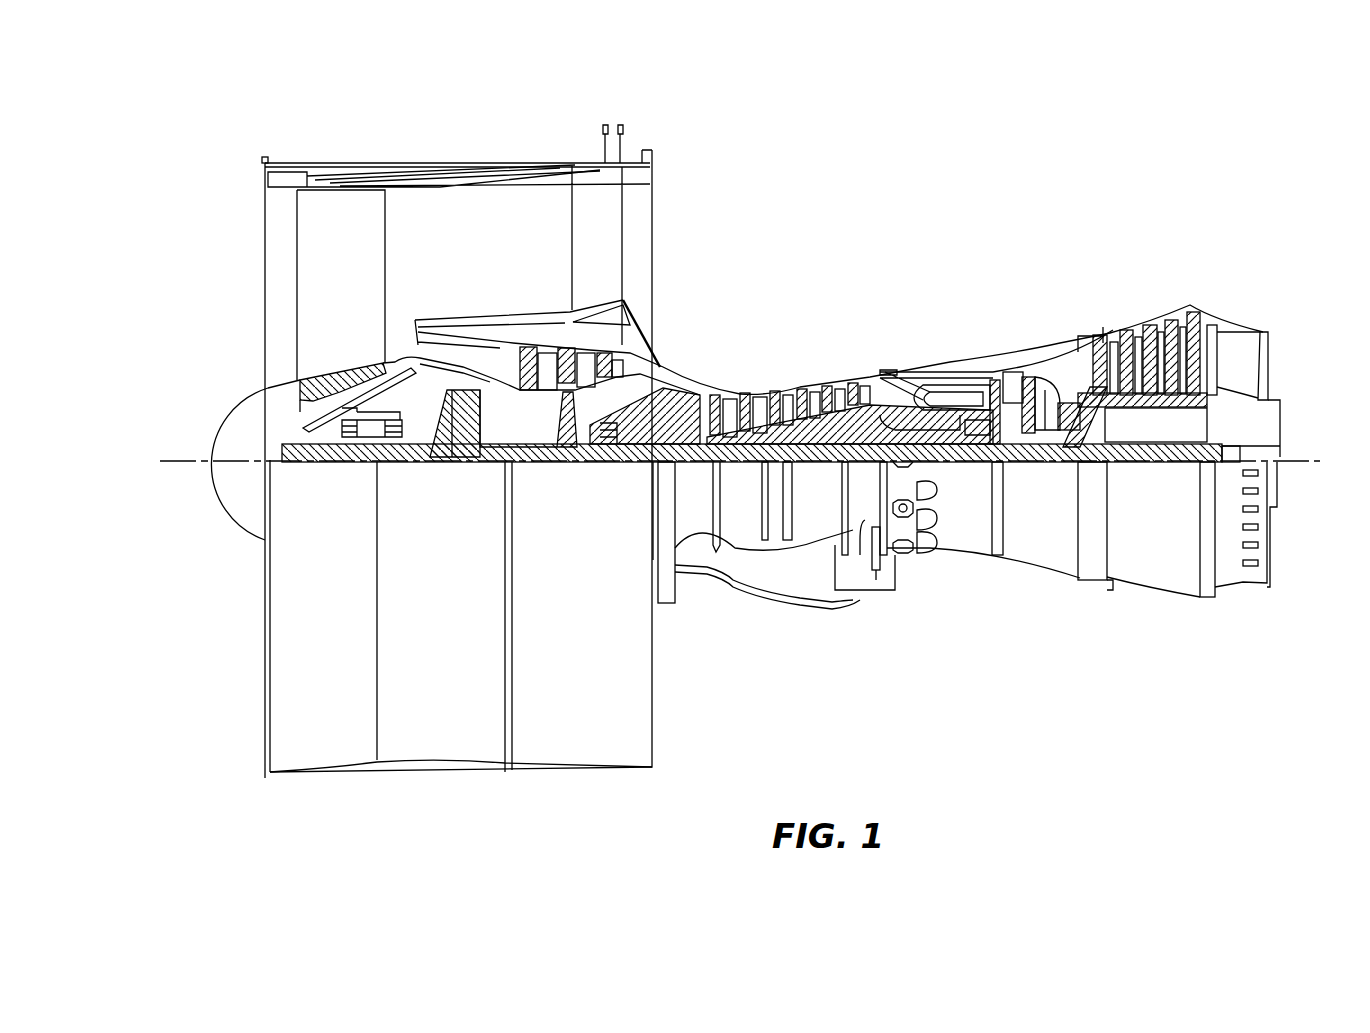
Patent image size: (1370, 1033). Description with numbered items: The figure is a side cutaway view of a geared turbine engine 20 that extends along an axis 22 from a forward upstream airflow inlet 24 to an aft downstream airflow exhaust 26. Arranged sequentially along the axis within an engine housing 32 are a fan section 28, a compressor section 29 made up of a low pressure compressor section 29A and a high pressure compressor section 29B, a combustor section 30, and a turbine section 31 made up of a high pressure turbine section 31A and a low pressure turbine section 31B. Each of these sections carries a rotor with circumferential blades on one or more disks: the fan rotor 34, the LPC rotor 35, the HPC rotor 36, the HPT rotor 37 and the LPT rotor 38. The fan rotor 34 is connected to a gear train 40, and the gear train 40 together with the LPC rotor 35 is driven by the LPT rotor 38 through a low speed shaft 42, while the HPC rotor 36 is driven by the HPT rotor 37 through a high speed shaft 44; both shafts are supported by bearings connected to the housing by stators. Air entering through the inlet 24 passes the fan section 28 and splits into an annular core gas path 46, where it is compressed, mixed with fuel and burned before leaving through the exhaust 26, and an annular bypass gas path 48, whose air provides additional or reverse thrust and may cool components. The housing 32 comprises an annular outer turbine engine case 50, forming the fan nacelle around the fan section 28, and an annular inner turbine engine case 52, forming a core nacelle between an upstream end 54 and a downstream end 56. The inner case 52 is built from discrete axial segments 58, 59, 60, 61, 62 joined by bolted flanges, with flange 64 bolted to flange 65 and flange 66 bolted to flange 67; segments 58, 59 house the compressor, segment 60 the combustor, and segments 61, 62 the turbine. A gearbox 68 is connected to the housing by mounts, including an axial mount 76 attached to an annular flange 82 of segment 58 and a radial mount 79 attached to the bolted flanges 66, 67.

The geared turbine engine 20 is at (215, 130).
The axis 22 is at (1306, 445).
The airflow inlet 24 is at (265, 212).
The airflow exhaust 26 is at (1270, 362).
The fan section 28 is at (425, 132).
The compressor section 29 is at (885, 222).
The low pressure compressor section 29A is at (678, 292).
The high pressure compressor section 29B is at (890, 292).
The combustor section 30 is at (985, 292).
The turbine section 31 is at (1205, 222).
The high pressure turbine section 31A is at (1075, 292).
The low pressure turbine section 31B is at (1205, 292).
The engine housing 32 is at (695, 745).
The fan rotor 34 is at (262, 388).
The LPC rotor 35 is at (558, 420).
The HPC rotor 36 is at (866, 415).
The HPT rotor 37 is at (1018, 462).
The LPT rotor 38 is at (1203, 350).
The gear train 40 is at (460, 465).
The low speed shaft 42 is at (1128, 462).
The high speed shaft 44 is at (955, 462).
The core gas path 46 is at (680, 387).
The bypass gas path 48 is at (466, 217).
The outer turbine engine case 50 is at (596, 770).
The inner turbine engine case 52 is at (1185, 600).
The upstream end 54 is at (415, 318).
The downstream end 56 is at (1270, 345).
The axial segment 58 is at (700, 550).
The axial segment 59 is at (800, 555).
The axial segment 60 is at (972, 550).
The axial segment 61 is at (1050, 565).
The axial segment 62 is at (1140, 590).
The flange 64 is at (690, 518).
The flange 65 is at (735, 552).
The flange 66 is at (866, 520).
The flange 67 is at (905, 560).
The gearbox 68 is at (885, 585).
The axial mount 76 is at (815, 614).
The radial mount 79 is at (877, 583).
The annular flange 82 is at (676, 605).